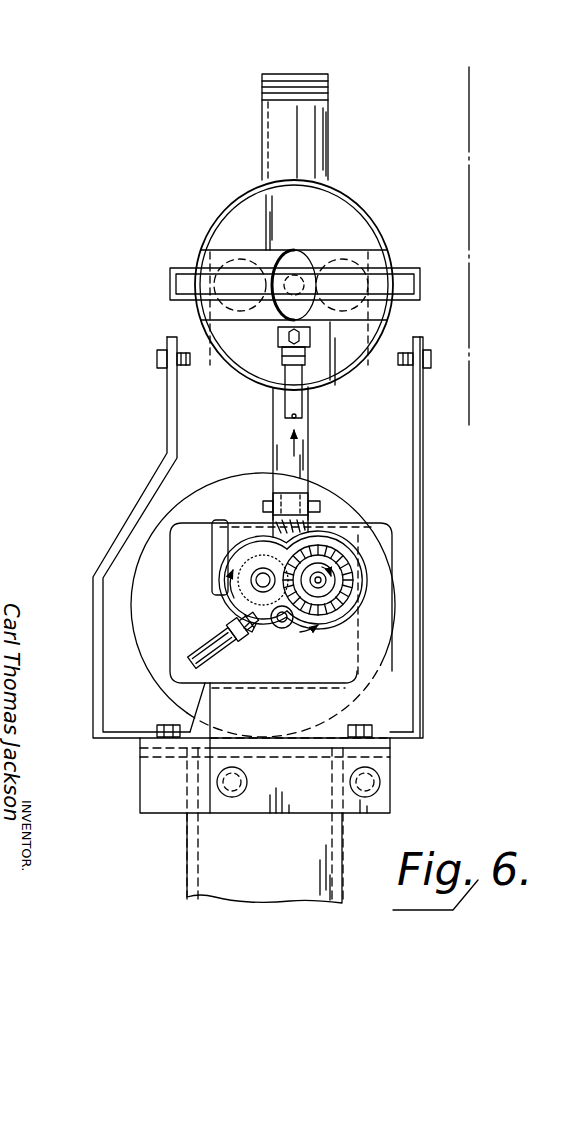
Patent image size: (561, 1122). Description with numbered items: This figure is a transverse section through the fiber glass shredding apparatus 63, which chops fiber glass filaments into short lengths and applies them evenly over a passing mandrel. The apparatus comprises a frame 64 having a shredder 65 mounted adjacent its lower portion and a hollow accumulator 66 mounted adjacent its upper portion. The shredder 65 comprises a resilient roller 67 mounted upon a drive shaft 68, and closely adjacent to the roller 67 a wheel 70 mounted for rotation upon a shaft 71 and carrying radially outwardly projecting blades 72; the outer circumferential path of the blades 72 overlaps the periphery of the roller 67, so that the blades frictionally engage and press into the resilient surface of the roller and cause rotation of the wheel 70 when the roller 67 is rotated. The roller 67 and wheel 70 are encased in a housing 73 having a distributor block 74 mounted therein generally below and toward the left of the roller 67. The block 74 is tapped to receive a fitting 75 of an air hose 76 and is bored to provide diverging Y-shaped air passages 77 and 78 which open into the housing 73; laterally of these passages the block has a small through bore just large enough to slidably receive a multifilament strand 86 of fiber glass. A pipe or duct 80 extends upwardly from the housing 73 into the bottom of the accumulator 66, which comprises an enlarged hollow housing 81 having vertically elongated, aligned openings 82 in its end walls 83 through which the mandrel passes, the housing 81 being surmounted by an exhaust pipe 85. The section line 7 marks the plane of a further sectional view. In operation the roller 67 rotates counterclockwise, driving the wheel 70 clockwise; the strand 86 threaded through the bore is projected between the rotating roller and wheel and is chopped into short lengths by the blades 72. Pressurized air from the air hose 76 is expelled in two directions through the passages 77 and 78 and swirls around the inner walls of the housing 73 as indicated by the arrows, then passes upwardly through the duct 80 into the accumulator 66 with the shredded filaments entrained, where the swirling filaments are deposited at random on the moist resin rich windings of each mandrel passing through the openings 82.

The section line 7— 7 is at (472, 75).
The shredding apparatus 63 is at (426, 488).
The frame 64 is at (420, 551).
The shredder 65 is at (197, 608).
The hollow accumulator 66 is at (214, 212).
The resilient roller 67 is at (232, 573).
The drive shaft 68 is at (262, 578).
The wheel 70 is at (322, 577).
The shaft 71 is at (323, 582).
The blades 72 is at (336, 635).
The housing 73 is at (346, 614).
The distributor block 74 is at (245, 642).
The fitting 75 is at (209, 637).
The air hose 76 is at (188, 672).
The air passage 77 is at (222, 622).
The air passage 78 is at (262, 642).
The pipe or duct 80 is at (305, 452).
The hollow housing 81 is at (238, 193).
The openings 82 is at (298, 262).
The end walls 83 is at (328, 216).
The exhaust pipe 85 is at (316, 128).
The strand 86 is at (285, 640).